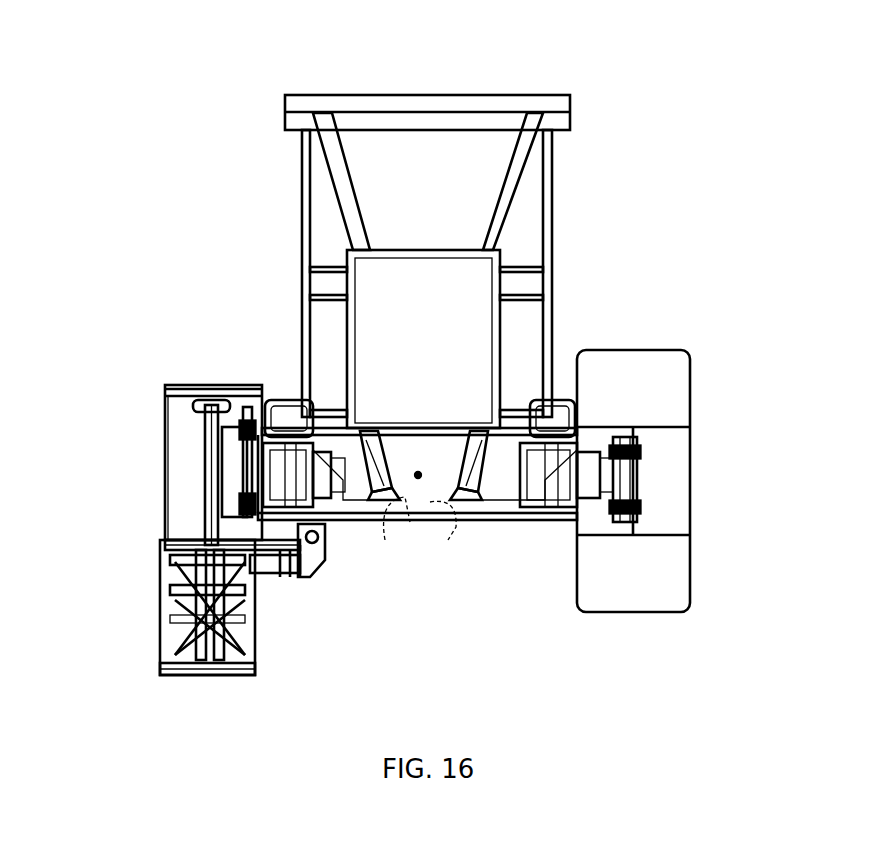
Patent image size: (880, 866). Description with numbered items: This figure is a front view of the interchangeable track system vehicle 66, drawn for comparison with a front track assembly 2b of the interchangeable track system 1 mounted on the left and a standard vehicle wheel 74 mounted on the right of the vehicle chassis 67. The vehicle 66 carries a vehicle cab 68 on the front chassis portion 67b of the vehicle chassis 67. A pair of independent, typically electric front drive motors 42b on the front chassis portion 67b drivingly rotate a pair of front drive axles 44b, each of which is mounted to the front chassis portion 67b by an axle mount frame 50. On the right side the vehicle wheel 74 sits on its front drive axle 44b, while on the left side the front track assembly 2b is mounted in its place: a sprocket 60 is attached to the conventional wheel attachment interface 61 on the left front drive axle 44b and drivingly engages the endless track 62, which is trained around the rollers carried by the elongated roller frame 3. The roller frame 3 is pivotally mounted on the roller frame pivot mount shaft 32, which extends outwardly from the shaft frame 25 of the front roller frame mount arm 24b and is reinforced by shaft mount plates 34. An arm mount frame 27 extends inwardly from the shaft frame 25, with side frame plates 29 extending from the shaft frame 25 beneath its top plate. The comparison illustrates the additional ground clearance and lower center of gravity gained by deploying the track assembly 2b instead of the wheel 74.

The interchangeable track system 1 is at (131, 315).
The front track assembly 2b is at (128, 682).
The roller frame 3 is at (160, 585).
The front roller frame mount arm 24b is at (327, 566).
The shaft frame 25 is at (295, 575).
The arm mount frame 27 is at (404, 543).
The side frame plates 29 is at (310, 573).
The roller frame pivot mount shaft 32 is at (183, 545).
The shaft mount plates 34 is at (287, 572).
The front drive motors 42b is at (465, 447).
The front drive axles 44b is at (472, 427).
The axle mount frame 50 is at (278, 398).
The sprocket 60 is at (203, 483).
The wheel attachment interface 61 is at (248, 383).
The endless track 62 is at (165, 453).
The vehicle 66 is at (250, 126).
The vehicle chassis 67 is at (512, 404).
The front chassis portion 67b is at (340, 462).
The vehicle cab 68 is at (425, 95).
The vehicle wheel 74 is at (645, 360).